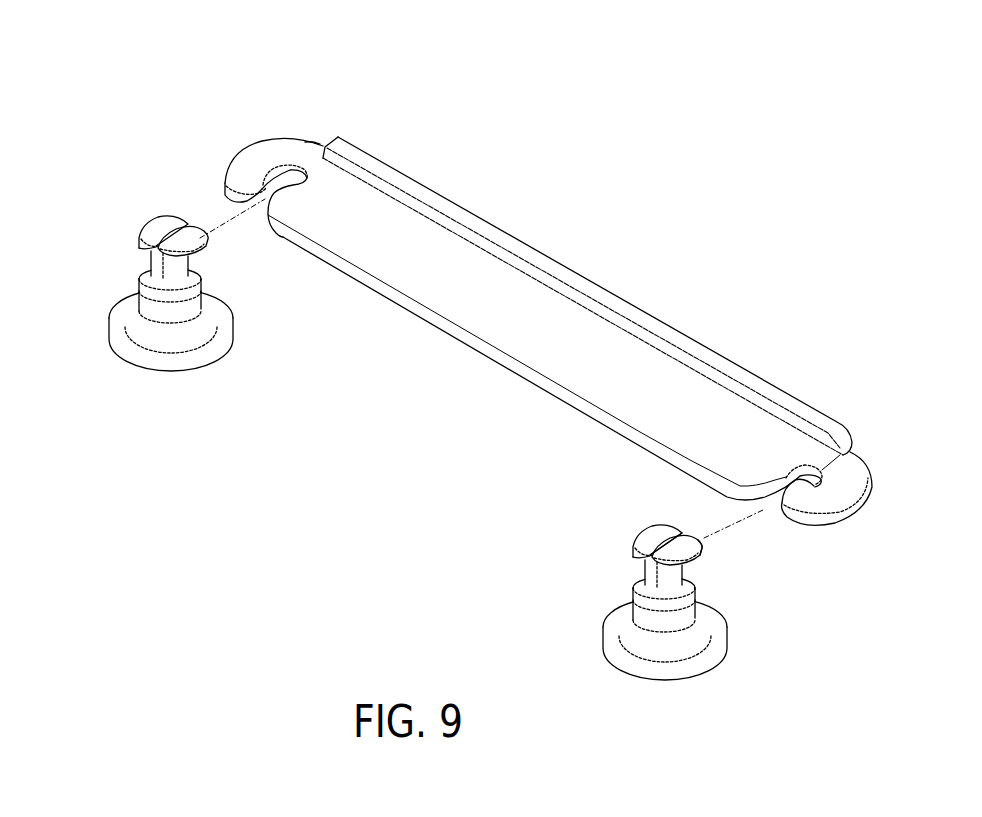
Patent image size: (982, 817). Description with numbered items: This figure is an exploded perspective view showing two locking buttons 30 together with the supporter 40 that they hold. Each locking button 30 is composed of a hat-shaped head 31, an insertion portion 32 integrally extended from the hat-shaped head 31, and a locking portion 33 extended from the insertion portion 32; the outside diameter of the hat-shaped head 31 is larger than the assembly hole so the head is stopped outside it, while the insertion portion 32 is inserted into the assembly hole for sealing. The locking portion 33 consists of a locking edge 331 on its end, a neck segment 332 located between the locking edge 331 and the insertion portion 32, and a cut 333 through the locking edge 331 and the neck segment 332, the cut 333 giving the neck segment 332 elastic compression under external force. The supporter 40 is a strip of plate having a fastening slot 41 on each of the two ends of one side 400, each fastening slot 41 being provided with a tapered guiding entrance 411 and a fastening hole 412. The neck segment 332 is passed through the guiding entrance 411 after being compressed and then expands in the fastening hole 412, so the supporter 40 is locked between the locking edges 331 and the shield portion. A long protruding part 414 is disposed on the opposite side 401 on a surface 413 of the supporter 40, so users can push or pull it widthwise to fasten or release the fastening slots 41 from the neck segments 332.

The locking button 30 is at (420, 412).
The hat-shaped head 31 is at (582, 587).
The insertion portion 32 is at (643, 615).
The locking portion 33 is at (464, 386).
The locking edge 331 is at (700, 562).
The neck segment 332 is at (673, 583).
The cut 333 is at (640, 555).
The supporter 40 is at (521, 293).
The side 400 is at (388, 300).
The side 401 is at (310, 140).
The fastening slot 41 is at (521, 293).
The tapered guiding entrance 411 is at (257, 188).
The fastening hole 412 is at (554, 276).
The surface 413 is at (472, 325).
The long protruding part 414 is at (607, 293).